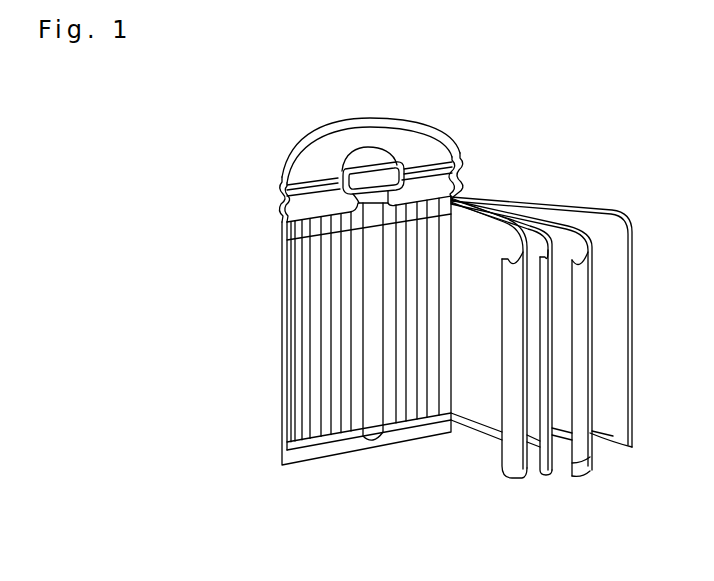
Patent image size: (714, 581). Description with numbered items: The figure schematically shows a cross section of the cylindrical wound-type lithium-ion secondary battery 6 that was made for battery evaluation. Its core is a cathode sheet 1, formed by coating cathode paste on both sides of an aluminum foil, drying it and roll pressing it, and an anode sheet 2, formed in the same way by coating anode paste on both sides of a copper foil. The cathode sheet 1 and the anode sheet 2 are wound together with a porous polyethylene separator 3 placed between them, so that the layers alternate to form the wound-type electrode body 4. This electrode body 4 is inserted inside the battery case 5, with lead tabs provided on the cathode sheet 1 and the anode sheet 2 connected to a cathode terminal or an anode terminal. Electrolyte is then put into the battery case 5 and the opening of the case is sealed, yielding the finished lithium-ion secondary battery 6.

The cathode sheet 1 is at (500, 483).
The anode sheet 2 is at (573, 483).
The separator 3 is at (618, 207).
The wound-type electrode body 4 is at (296, 396).
The battery case 5 is at (282, 303).
The lithium-ion secondary battery 6 is at (488, 152).